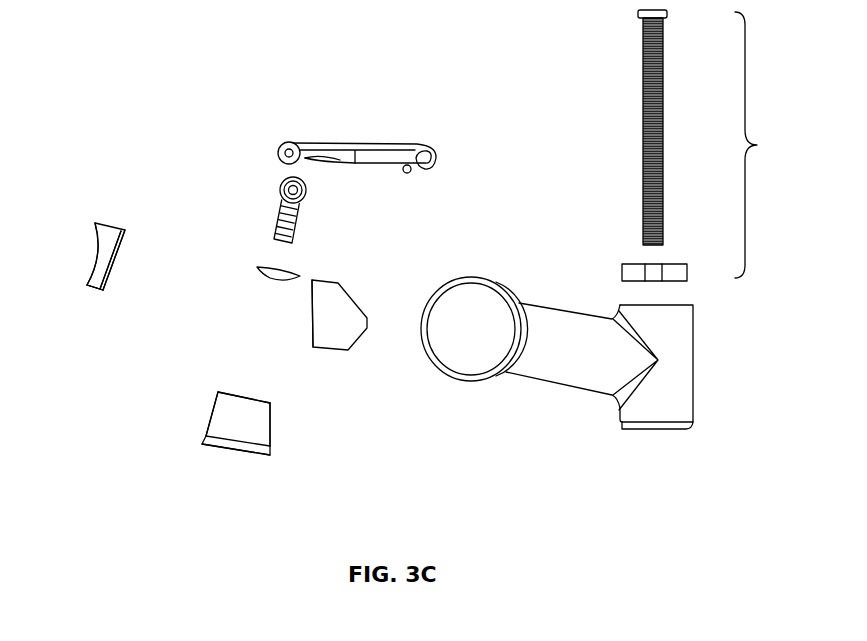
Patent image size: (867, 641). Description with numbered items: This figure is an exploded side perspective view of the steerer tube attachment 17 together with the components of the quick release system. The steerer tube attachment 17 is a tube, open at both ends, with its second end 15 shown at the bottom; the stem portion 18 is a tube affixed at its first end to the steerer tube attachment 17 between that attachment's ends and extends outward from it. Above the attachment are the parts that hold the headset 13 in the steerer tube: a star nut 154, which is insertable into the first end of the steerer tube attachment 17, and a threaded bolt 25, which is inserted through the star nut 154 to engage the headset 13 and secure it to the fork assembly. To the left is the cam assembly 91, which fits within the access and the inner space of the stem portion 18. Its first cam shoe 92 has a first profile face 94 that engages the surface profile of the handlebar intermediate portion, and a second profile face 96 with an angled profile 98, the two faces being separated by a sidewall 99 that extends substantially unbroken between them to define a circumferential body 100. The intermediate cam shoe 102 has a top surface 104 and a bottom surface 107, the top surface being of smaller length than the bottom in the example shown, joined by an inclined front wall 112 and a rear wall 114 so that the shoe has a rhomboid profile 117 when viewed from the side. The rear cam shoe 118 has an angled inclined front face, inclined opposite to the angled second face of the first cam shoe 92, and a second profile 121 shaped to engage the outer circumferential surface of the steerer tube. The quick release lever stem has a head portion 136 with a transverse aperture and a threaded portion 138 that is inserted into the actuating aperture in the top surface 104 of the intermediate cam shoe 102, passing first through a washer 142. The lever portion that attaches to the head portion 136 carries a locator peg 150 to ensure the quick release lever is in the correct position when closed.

The headset 13 is at (764, 145).
The second end 15 is at (672, 428).
The steerer tube attachment 17 is at (684, 325).
The stem portion 18 is at (565, 372).
The threaded bolt 25 is at (664, 118).
The cam assembly 91 is at (96, 410).
The first cam shoe 92 is at (117, 212).
The first profile face 94 is at (90, 283).
The second profile face 96 is at (115, 268).
The angled profile 98 is at (132, 230).
The sidewall 99 is at (95, 287).
The body 100 is at (115, 292).
The intermediate cam shoe 102 is at (190, 458).
The top surface 104 is at (243, 392).
The bottom surface 107 is at (233, 452).
The inclined front wall 112 is at (208, 418).
The rear wall 114 is at (272, 430).
The rhomboid profile 117 is at (283, 500).
The rear cam shoe 118 is at (338, 262).
The second profile 121 is at (352, 300).
The head portion 136 is at (280, 185).
The threaded portion 138 is at (277, 229).
The washer 142 is at (262, 273).
The locator peg 150 is at (410, 174).
The star nut 154 is at (633, 262).